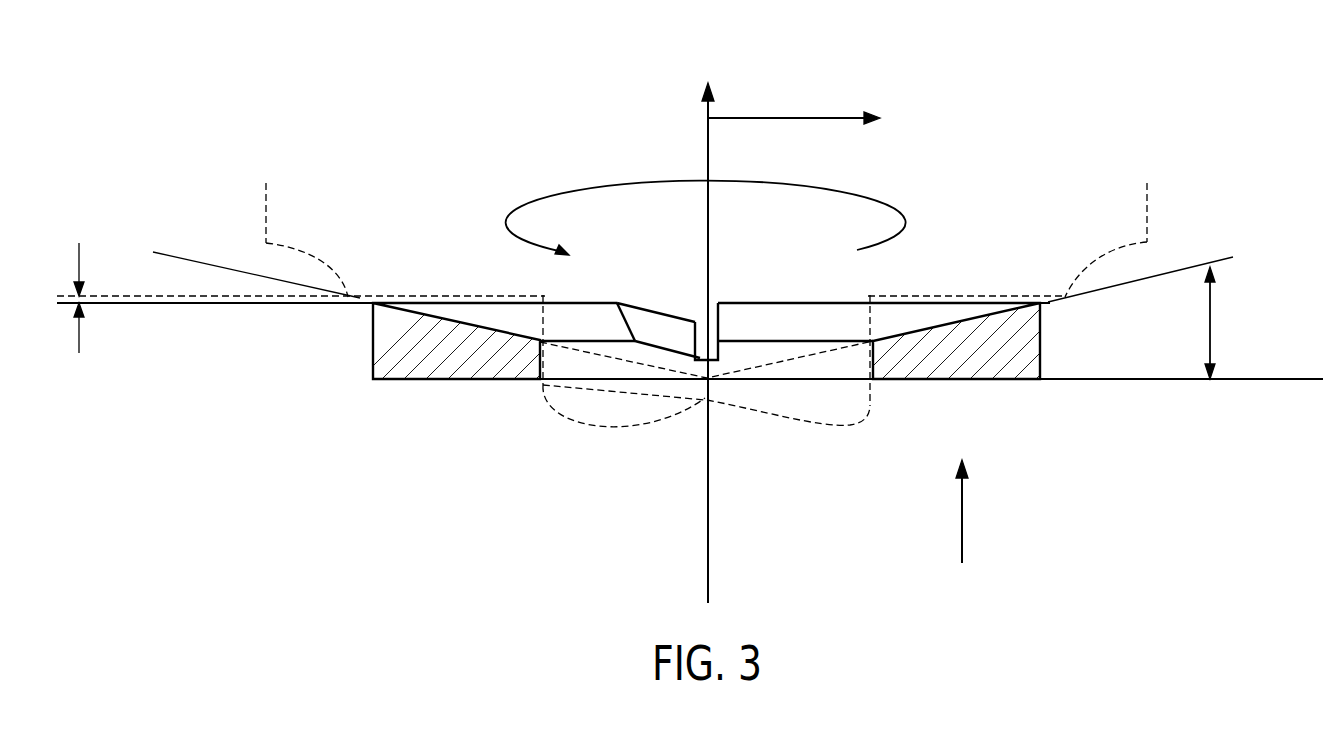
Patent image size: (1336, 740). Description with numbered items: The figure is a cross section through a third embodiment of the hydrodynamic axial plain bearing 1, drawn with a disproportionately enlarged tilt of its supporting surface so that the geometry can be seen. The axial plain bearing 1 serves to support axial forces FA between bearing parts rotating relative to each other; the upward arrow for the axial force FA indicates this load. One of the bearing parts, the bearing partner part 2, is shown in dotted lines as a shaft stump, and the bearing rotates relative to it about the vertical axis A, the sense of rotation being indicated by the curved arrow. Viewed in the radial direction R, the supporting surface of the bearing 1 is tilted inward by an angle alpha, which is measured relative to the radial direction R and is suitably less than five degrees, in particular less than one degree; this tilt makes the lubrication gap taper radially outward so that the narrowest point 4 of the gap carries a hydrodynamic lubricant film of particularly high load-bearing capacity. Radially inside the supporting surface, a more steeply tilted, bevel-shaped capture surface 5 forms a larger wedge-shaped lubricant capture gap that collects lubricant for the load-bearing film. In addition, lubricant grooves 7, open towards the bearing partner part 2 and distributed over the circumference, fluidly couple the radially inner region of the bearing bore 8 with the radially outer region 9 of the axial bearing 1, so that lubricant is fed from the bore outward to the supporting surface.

The hydrodynamic axial plain bearing 1 is at (956, 276).
The bearing partner part 2 is at (995, 302).
The narrowest point 4 is at (877, 192).
The capture surface 5 is at (665, 335).
The lubricant groove 7 is at (707, 382).
The bearing bore 8 is at (754, 460).
The radially outer region 9 is at (1311, 332).
The radial direction R is at (773, 118).
The rotation axis A is at (700, 155).
The axial force FA is at (962, 508).
The angle alpha is at (1212, 315).